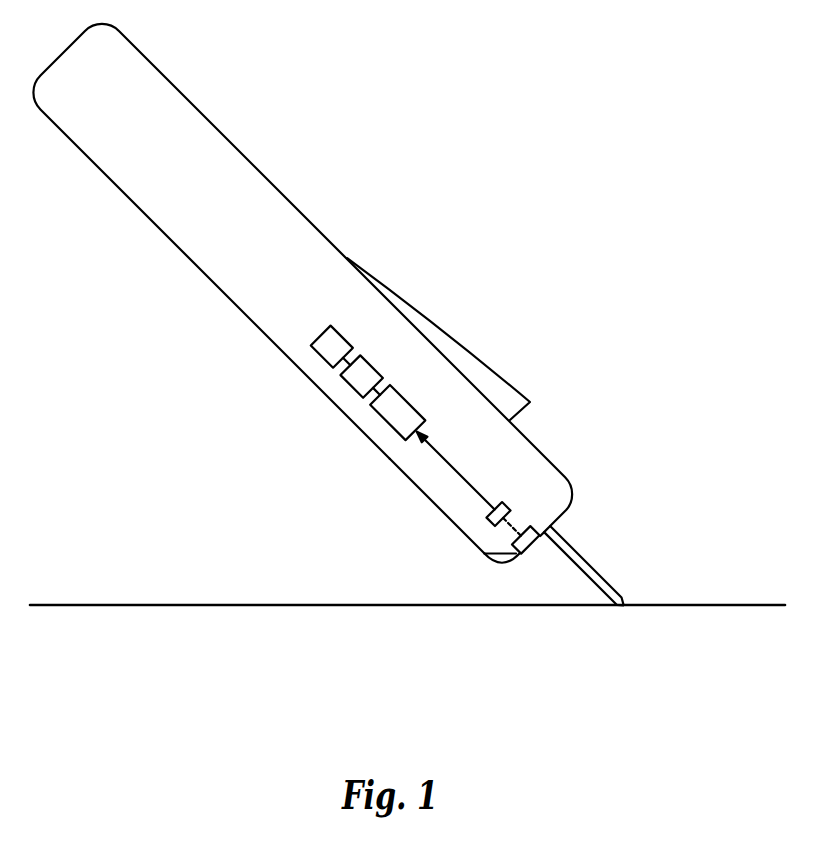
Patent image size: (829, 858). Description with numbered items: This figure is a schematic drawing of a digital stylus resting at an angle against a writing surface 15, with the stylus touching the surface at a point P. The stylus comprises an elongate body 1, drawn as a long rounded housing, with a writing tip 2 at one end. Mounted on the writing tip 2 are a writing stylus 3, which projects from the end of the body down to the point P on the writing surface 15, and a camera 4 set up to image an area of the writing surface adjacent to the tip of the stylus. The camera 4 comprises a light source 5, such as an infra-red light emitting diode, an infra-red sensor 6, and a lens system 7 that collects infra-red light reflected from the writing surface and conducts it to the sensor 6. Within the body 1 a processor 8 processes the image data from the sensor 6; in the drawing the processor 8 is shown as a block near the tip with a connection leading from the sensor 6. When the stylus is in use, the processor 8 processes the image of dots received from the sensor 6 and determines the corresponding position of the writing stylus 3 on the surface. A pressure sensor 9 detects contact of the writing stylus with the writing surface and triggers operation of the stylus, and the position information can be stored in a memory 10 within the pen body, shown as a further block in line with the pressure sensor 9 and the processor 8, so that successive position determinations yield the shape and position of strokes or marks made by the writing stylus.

The elongate body 1 is at (178, 255).
The writing tip 2 is at (450, 537).
The writing stylus 3 is at (583, 576).
The camera 4 is at (478, 568).
The light source 5 is at (502, 557).
The infra-red sensor 6 is at (487, 518).
The lens system 7 is at (532, 547).
The processor 8 is at (392, 415).
The pressure sensor 9 is at (360, 383).
The memory 10 is at (328, 352).
The writing surface 15 is at (175, 605).
The contact point P is at (622, 622).